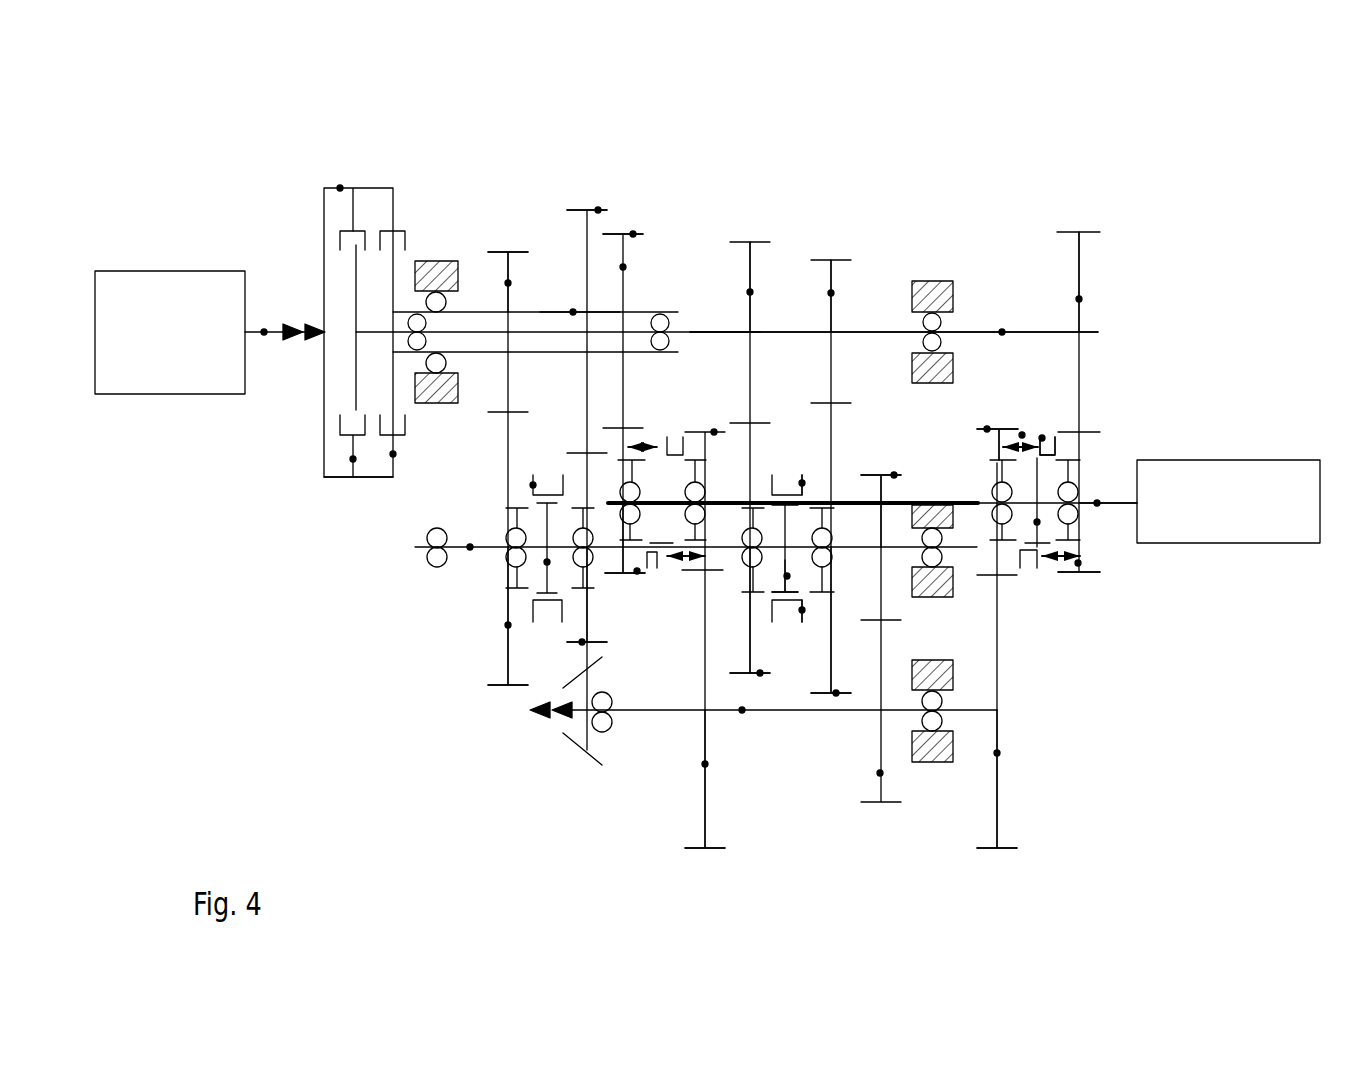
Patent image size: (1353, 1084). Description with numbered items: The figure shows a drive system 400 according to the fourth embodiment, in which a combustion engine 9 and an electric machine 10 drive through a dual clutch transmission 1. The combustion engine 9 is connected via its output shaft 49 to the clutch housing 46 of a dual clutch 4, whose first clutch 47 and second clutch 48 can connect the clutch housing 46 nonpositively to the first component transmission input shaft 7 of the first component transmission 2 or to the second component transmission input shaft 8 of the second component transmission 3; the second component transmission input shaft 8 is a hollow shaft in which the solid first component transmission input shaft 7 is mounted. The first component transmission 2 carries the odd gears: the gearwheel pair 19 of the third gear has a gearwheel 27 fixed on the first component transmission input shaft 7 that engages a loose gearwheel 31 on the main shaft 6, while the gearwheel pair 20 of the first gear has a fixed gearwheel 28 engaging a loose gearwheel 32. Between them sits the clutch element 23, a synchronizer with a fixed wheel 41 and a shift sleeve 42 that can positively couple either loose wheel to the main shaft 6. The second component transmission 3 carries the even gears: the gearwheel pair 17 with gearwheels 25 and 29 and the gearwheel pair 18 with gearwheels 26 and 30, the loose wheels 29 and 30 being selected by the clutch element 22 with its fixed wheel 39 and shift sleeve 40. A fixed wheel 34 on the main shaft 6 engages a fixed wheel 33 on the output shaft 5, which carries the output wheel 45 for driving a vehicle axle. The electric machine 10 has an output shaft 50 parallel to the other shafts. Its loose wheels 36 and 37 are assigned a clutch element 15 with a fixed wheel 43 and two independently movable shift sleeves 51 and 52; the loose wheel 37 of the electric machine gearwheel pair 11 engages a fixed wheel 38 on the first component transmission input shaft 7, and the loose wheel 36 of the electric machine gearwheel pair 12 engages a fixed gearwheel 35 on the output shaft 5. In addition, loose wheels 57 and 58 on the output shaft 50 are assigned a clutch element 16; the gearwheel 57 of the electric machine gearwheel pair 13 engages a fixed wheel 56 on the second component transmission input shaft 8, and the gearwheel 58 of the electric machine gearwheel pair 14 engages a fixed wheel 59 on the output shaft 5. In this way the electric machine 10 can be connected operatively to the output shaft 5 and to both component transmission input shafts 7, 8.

The drive system 400 is at (217, 163).
The combustion engine 9 is at (182, 350).
The electric machine 10 is at (1236, 517).
The output shaft 49 is at (264, 332).
The clutch housing 46 is at (340, 188).
The first clutch 47 is at (353, 459).
The second clutch 48 is at (393, 454).
The dual clutch 4 is at (336, 482).
The second component transmission 3 is at (543, 305).
The second component transmission input shaft 8 is at (573, 312).
The first component transmission input shaft 7 is at (1002, 332).
The dual clutch transmission 1 is at (704, 195).
The first component transmission 2 is at (885, 300).
The gearwheel pair 17 is at (508, 283).
The gearwheel 25 is at (500, 248).
The gearwheel 29 is at (508, 625).
The gearwheel pair 18 is at (586, 205).
The gearwheel 26 is at (598, 210).
The gearwheel 30 is at (582, 642).
The output wheel 45 is at (571, 746).
The output shaft 5 is at (742, 710).
The electric machine gearwheel pair 13 is at (623, 267).
The fixed wheel 56 is at (633, 234).
The gearwheel 57 is at (637, 571).
The clutch element 16 is at (666, 426).
The gearwheel 58 is at (714, 432).
The electric machine gearwheel pair 14 is at (700, 797).
The fixed wheel 59 is at (705, 764).
The gearwheel pair 19 is at (751, 238).
The gearwheel 27 is at (750, 292).
The gearwheel 31 is at (760, 673).
The clutch element 23 is at (790, 466).
The shift sleeve 42 is at (802, 483).
The fixed wheel 41 is at (802, 610).
The gearwheel pair 20 is at (833, 254).
The gearwheel 28 is at (831, 293).
The gearwheel 32 is at (836, 693).
The fixed wheel 33 is at (880, 773).
The fixed wheel 34 is at (894, 475).
The main shaft 6 is at (470, 547).
The fixed wheel 39 is at (547, 562).
The shift sleeve 40 is at (533, 485).
The clutch element 22 is at (543, 625).
The electric machine gearwheel pair 11 is at (1087, 267).
The fixed wheel 38 is at (1079, 299).
The loose wheel 36 is at (987, 429).
The shift sleeve 51 is at (1022, 435).
The shift sleeve 52 is at (1042, 438).
The output shaft 50 is at (1097, 503).
The fixed wheel 43 is at (1037, 522).
The loose wheel 37 is at (1078, 563).
The clutch element 15 is at (1043, 576).
The gearwheel 35 is at (997, 753).
The electric machine gearwheel pair 12 is at (1007, 815).